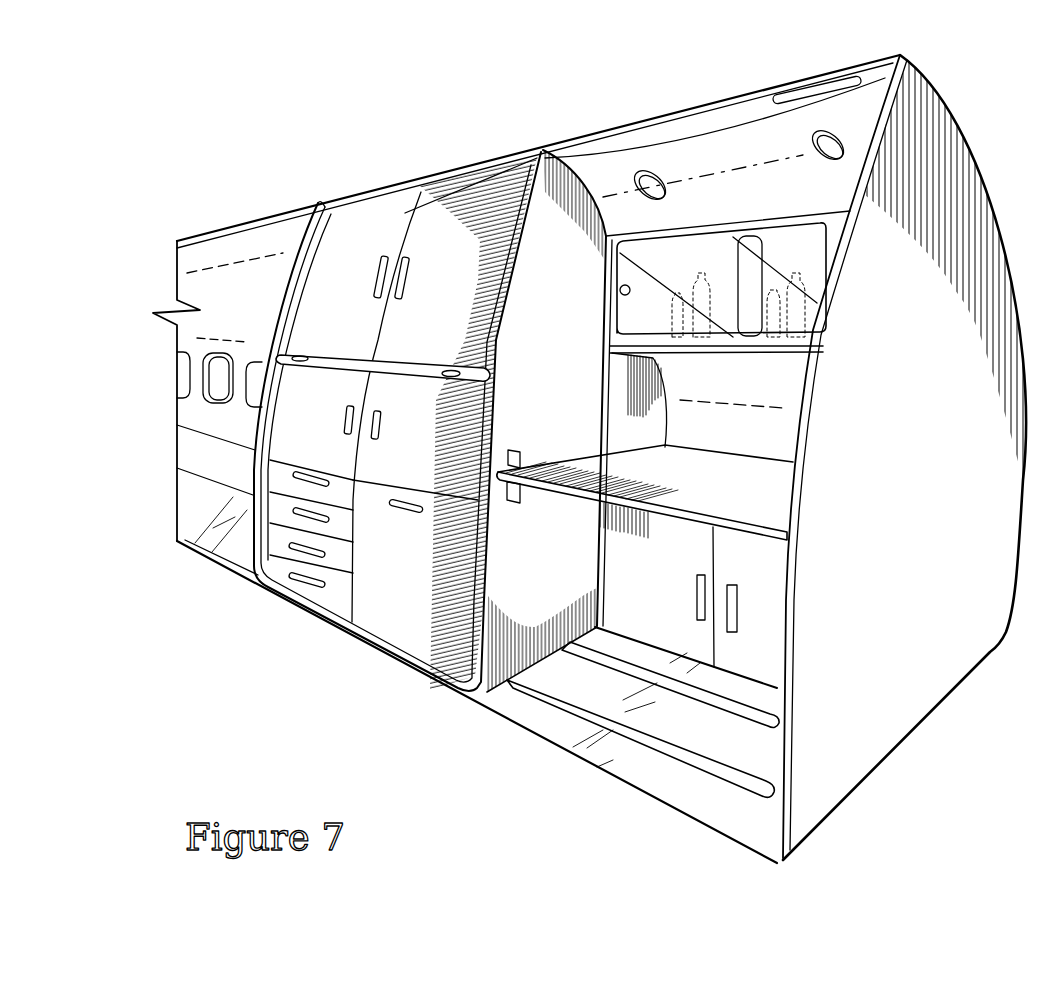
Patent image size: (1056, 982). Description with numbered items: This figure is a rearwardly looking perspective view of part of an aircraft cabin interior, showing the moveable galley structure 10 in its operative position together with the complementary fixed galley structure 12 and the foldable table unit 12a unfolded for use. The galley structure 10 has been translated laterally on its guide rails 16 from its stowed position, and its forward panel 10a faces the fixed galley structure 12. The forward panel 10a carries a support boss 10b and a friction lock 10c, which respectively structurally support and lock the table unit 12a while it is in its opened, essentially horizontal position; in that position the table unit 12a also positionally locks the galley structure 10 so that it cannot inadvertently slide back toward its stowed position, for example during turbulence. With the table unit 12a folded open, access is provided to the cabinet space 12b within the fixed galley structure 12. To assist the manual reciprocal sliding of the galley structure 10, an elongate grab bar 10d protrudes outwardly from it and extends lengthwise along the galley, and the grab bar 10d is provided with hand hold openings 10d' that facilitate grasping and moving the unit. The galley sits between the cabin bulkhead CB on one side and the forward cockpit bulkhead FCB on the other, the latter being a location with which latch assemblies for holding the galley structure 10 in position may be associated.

The cabin bulkhead frame CB is at (297, 241).
The moveable galley structure 10 is at (387, 222).
The forward panel 10a is at (565, 366).
The support boss 10b is at (518, 494).
The friction lock 10c is at (518, 455).
The grab bar 10d is at (383, 387).
The hand hold openings 10d' is at (376, 346).
The fixed galley structure 12 is at (713, 247).
The foldable table unit 12a is at (742, 507).
The cabinet space 12b is at (772, 372).
The guide rails 16 is at (570, 700).
The forward cockpit bulkhead FCB is at (918, 358).